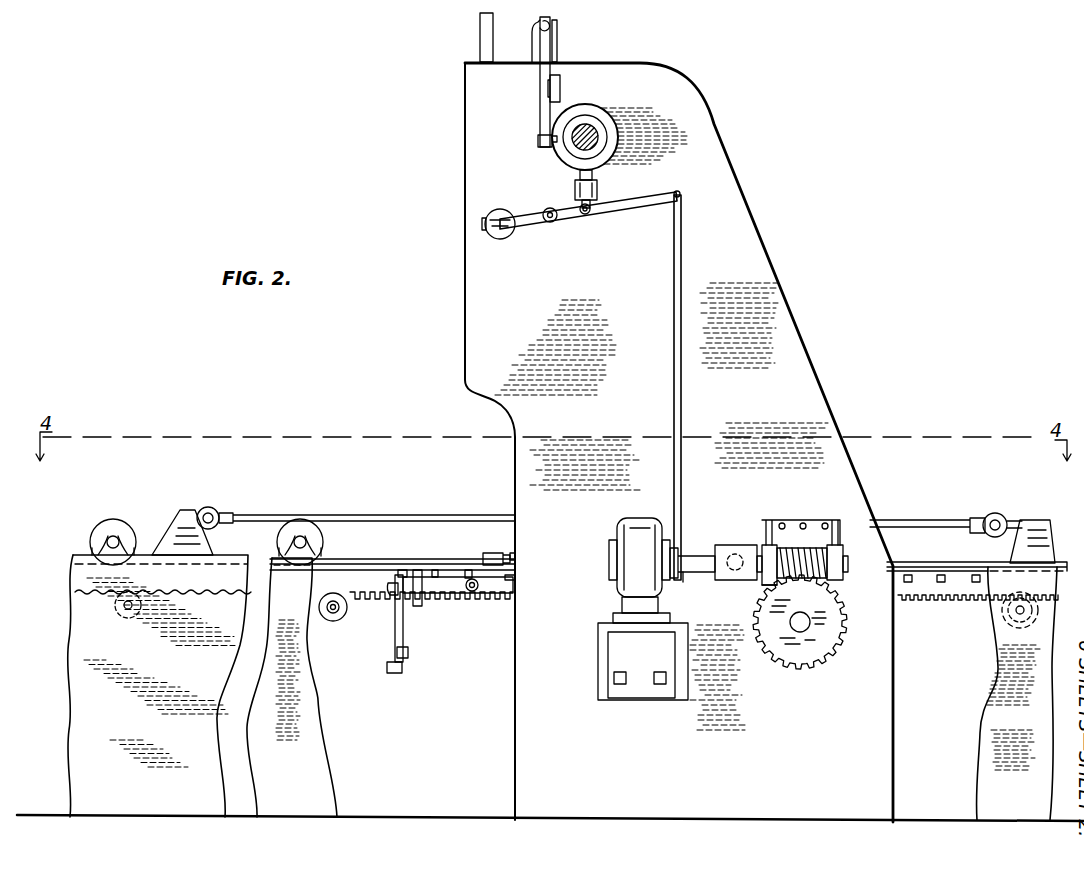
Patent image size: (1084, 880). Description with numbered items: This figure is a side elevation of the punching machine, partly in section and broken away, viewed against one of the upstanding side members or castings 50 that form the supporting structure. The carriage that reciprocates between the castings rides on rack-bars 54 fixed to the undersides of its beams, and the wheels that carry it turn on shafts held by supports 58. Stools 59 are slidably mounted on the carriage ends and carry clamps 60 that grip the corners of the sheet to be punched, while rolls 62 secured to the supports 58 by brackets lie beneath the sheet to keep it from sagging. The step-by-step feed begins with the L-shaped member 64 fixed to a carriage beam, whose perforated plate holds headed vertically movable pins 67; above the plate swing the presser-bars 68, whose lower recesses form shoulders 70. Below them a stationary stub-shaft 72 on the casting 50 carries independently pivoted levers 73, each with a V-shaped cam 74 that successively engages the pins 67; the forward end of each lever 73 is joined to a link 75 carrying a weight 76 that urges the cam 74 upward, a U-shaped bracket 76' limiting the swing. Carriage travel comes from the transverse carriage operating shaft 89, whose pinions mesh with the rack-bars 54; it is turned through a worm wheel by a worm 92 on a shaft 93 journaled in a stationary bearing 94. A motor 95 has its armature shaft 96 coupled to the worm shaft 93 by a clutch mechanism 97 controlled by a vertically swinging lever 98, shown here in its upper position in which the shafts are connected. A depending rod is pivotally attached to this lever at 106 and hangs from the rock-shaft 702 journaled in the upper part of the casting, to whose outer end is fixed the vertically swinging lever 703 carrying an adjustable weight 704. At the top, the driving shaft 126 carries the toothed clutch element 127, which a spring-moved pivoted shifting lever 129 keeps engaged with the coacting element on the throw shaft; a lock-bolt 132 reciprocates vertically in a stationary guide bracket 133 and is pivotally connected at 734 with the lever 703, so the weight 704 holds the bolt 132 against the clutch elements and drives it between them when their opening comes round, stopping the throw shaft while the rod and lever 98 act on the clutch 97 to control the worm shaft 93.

The side members or castings 50 is at (805, 388).
The rack-bars 54 is at (938, 600).
The supports 58 is at (985, 715).
The stools 59 is at (185, 512).
The clamps 60 is at (225, 511).
The rolls 62 is at (118, 522).
The horizontal plate or member 64 is at (398, 562).
The headed vertically movable pins 67 is at (420, 517).
The presser-bars 68 is at (489, 553).
The shoulders 70 is at (513, 553).
The stub-shaft 72 is at (473, 595).
The levers 73 is at (440, 600).
The V-shaped portion or cam 74 is at (500, 578).
The link 75 is at (395, 622).
The weight 76 is at (381, 679).
The U-shaped bracket 76' is at (430, 623).
The carriage operating shaft 89 is at (805, 625).
The worm 92 is at (797, 545).
The worm shaft 93 is at (845, 575).
The stationary bearing 94 is at (835, 560).
The motor 95 is at (632, 555).
The armature shaft 96 is at (683, 582).
The clutch mechanism 97 is at (735, 548).
The vertically swinging lever 98 is at (692, 560).
The pivotal connection 106 is at (683, 258).
The driving shaft 126 is at (592, 130).
The toothed clutch element 127 is at (575, 108).
The shifting lever 129 is at (540, 75).
The lock-bolt 132 is at (598, 183).
The guide bracket 133 is at (575, 190).
The pivot 702 is at (550, 223).
The lever 703 is at (636, 208).
The knob 704 is at (500, 240).
The pivot pin 734 is at (584, 215).